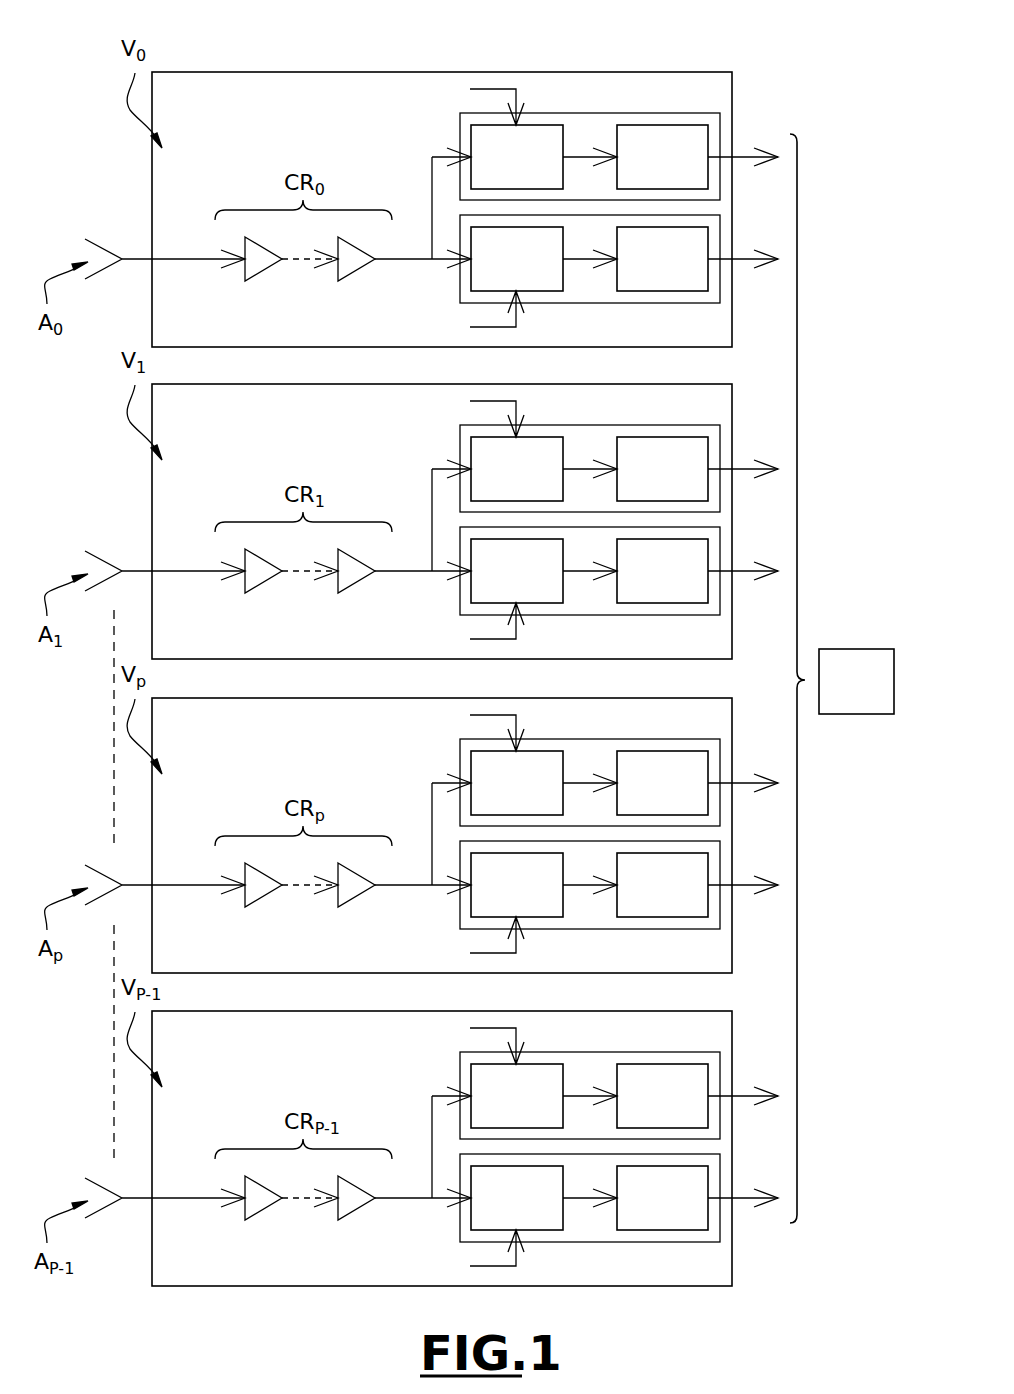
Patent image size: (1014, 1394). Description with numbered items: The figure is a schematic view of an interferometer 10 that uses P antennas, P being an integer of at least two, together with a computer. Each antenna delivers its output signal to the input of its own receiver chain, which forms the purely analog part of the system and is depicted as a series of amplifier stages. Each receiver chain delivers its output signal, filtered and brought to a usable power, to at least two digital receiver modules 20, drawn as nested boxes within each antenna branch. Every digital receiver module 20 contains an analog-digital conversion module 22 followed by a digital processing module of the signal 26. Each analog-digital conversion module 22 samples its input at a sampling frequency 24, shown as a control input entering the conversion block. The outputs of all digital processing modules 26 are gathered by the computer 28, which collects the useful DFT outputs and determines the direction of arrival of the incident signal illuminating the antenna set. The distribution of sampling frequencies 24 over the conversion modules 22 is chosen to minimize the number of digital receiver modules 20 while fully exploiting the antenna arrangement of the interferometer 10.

The interferometer 10 is at (712, 42).
The digital receiver module 20 is at (585, 113).
The analog-digital conversion module 22 is at (517, 677).
The sampling frequency 24 is at (480, 678).
The digital processing module of the signal 26 is at (662, 677).
The computer 28 is at (842, 678).